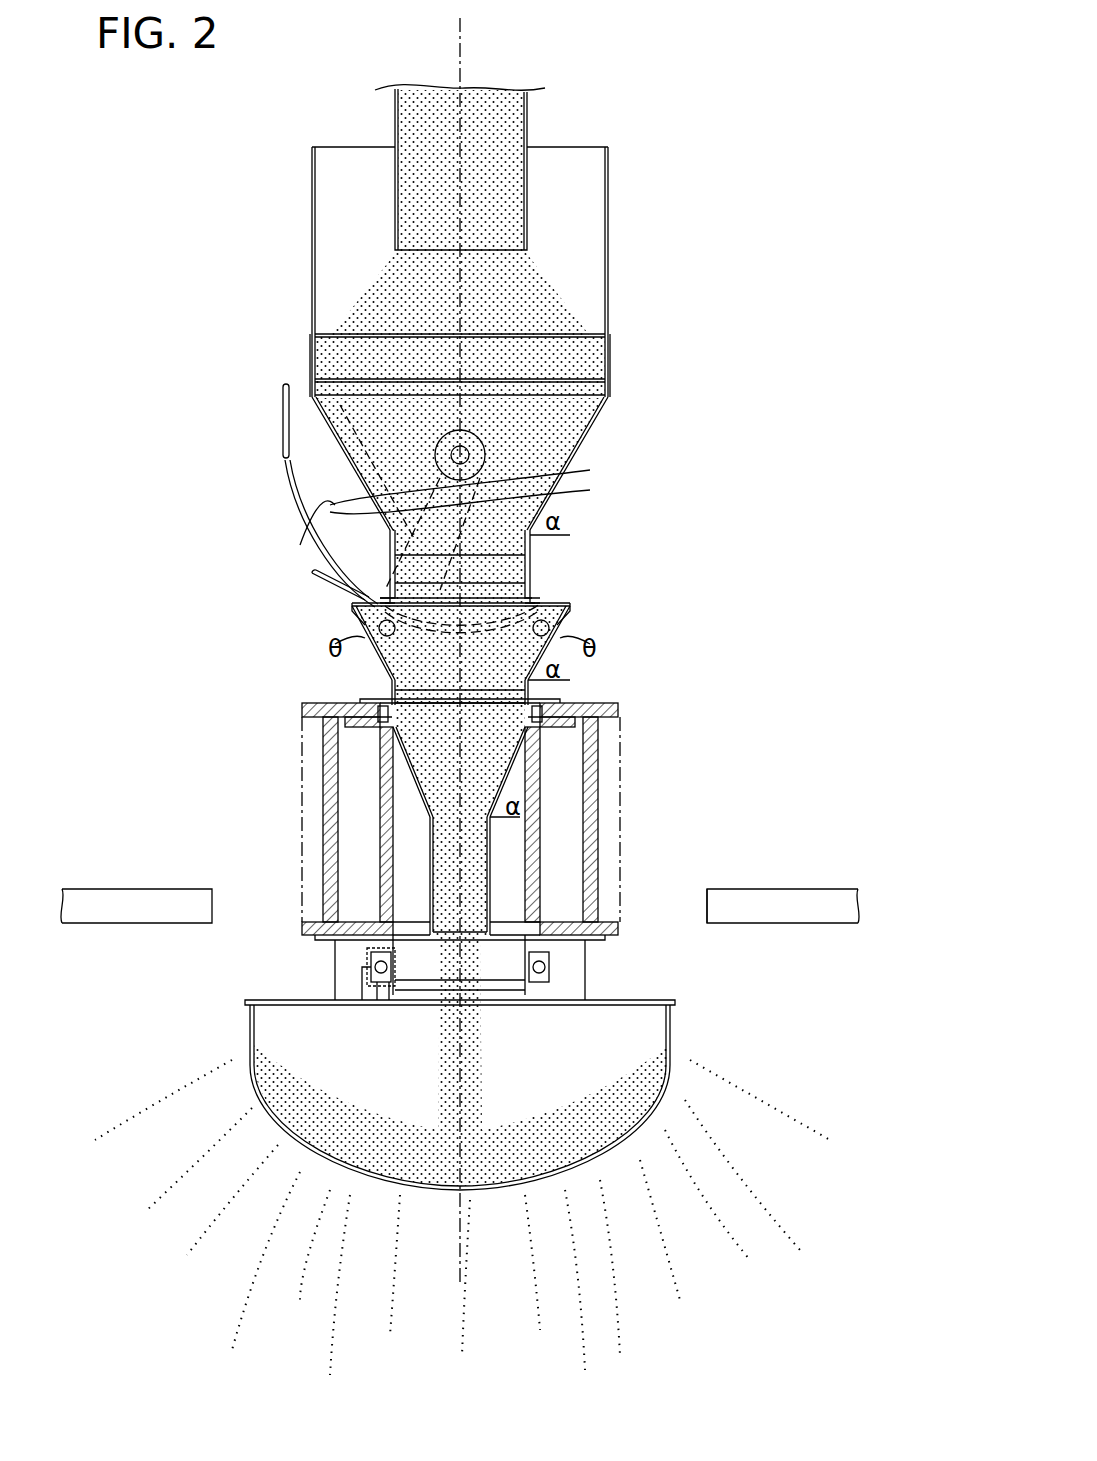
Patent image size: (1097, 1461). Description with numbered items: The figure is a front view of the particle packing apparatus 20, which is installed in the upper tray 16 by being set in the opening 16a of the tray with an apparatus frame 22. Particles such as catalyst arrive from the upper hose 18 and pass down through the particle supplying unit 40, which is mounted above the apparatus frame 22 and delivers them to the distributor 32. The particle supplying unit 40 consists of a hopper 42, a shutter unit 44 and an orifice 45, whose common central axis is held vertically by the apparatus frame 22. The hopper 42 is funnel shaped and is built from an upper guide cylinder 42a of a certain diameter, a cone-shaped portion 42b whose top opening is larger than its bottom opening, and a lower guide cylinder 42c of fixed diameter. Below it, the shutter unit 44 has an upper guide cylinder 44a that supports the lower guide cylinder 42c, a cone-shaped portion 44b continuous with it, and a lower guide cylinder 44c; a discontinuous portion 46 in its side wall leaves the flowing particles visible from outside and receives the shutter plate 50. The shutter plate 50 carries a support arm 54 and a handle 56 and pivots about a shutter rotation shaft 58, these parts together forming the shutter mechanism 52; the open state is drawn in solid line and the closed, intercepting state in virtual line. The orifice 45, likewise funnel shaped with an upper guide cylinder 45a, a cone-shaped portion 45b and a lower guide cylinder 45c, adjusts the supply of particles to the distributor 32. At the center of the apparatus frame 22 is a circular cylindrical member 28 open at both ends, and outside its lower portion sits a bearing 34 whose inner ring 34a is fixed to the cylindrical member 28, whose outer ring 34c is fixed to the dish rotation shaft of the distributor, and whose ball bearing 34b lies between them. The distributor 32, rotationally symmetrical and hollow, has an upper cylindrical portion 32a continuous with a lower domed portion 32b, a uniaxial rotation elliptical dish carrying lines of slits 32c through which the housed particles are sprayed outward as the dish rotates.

The upper tray 16 is at (798, 892).
The opening 16a is at (712, 898).
The upper hose 18 is at (395, 112).
The particle packing apparatus 20 is at (662, 150).
The apparatus frame 22 is at (608, 698).
The circular cylindrical member 28 is at (380, 890).
The distributor 32 is at (462, 1187).
The upper cylindrical portion 32a is at (250, 1037).
The lower domed portion 32b is at (272, 1122).
The slits 32c is at (332, 1168).
The bearing 34 is at (362, 966).
The inner ring 34a is at (387, 984).
The ball bearing 34b is at (380, 984).
The outer ring 34c is at (374, 982).
The particle supplying unit 40 is at (125, 345).
The hopper 42 is at (183, 237).
The upper guide cylinder 42a is at (312, 262).
The cone-shaped portion 42b is at (332, 448).
The lower guide cylinder 42c is at (388, 545).
The shutter unit 44 is at (183, 620).
The upper guide cylinder 44a is at (370, 606).
The cone-shaped portion 44b is at (380, 654).
The lower guide cylinder 44c is at (392, 693).
The orifice 45 is at (183, 735).
The upper guide cylinder 45a is at (336, 728).
The cone-shaped portion 45b is at (408, 790).
The lower guide cylinder 45c is at (430, 832).
The discontinuous portion 46 is at (334, 598).
The shutter plate 50 is at (410, 559).
The shutter mechanism 52 is at (678, 412).
The support arm 54 is at (475, 512).
The handle 56 is at (460, 483).
The shutter rotation shaft 58 is at (483, 444).